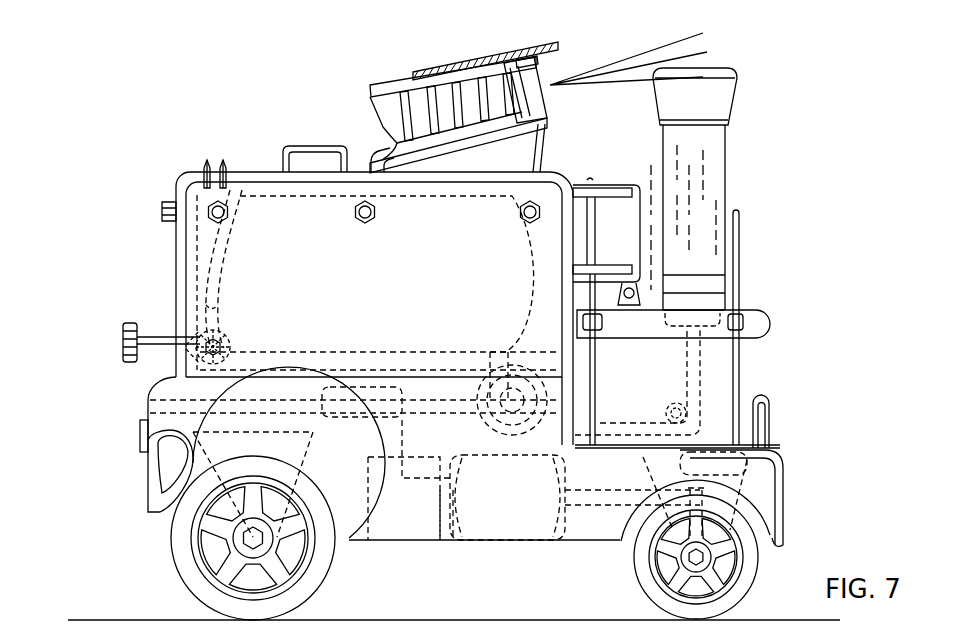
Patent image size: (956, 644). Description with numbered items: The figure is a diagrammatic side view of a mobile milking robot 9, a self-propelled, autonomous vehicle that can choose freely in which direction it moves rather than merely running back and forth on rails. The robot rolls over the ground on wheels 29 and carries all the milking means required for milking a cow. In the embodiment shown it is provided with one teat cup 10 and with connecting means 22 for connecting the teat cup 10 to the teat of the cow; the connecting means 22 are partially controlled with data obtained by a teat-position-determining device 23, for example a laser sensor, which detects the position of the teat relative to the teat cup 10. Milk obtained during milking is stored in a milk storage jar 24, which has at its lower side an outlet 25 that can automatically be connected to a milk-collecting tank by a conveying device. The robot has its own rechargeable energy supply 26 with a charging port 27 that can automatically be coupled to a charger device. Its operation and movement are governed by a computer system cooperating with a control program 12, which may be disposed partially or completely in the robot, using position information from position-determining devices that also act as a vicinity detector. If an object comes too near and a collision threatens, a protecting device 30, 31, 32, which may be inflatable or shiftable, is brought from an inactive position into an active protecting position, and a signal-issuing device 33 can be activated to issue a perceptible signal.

The mobile milking robot 9 is at (150, 280).
The teat cup 10 is at (715, 167).
The control program 12 is at (400, 517).
The connecting means 22 is at (775, 318).
The teat-position-determining device 23 is at (482, 100).
The milk storage jar 24 is at (265, 200).
The outlet 25 is at (125, 342).
The energy supply 26 is at (200, 230).
The charging port 27 is at (207, 173).
The wheels 29 is at (187, 563).
The protecting device 30 is at (467, 67).
The protecting device 31 is at (162, 473).
The protecting device 32 is at (770, 483).
The signal-issuing device 33 is at (317, 153).